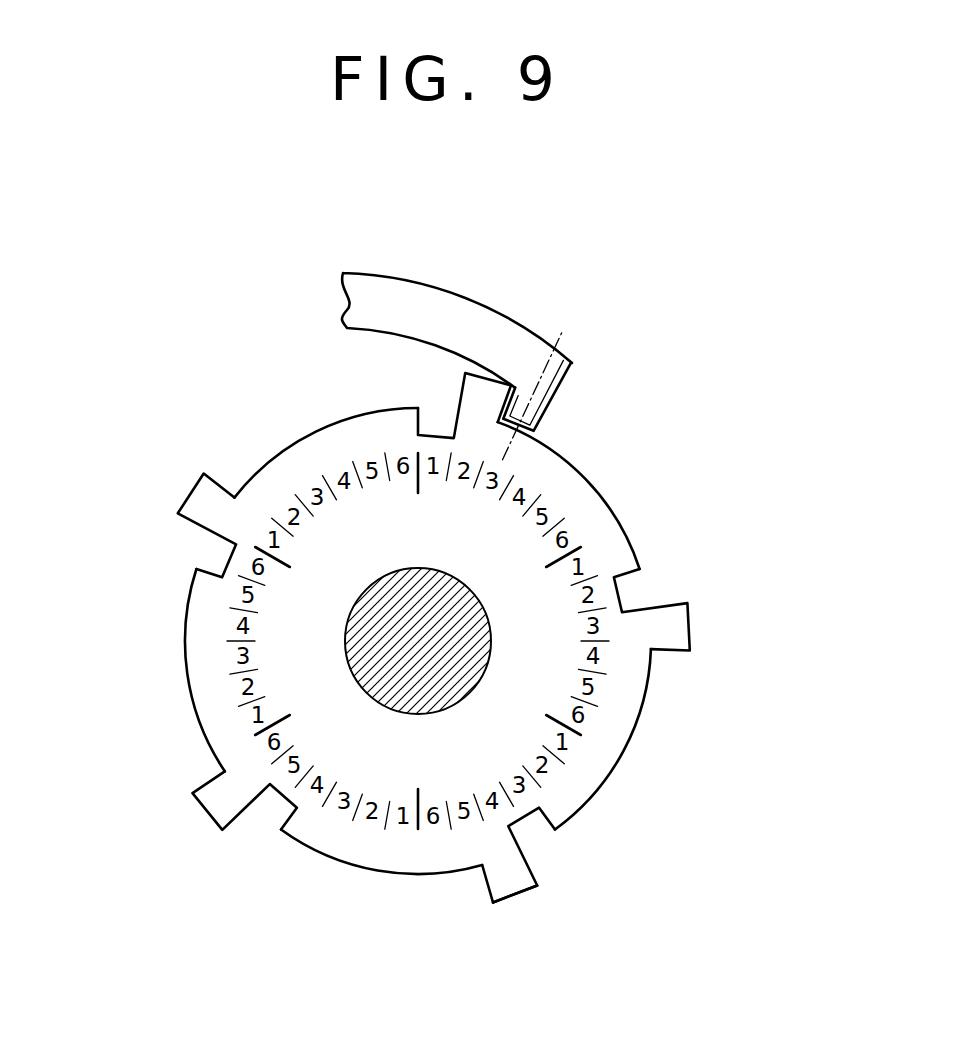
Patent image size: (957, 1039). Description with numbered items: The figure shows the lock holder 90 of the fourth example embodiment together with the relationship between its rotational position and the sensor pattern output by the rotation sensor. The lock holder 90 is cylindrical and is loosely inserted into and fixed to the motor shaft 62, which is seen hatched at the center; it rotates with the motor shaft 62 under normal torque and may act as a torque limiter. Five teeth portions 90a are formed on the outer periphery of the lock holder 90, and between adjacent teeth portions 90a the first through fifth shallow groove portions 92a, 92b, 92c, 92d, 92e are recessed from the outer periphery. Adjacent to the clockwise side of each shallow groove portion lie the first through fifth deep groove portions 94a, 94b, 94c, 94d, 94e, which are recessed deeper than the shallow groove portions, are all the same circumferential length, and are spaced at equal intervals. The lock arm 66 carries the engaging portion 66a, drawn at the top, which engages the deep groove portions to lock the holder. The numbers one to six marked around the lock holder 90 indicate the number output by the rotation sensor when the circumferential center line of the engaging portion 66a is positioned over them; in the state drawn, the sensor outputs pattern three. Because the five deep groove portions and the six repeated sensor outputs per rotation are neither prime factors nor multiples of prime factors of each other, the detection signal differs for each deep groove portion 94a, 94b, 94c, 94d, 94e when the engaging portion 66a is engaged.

The motor shaft 62 is at (440, 714).
The lock arm 66 is at (509, 318).
The engaging portion 66a is at (553, 392).
The lock holder 90 is at (426, 650).
The teeth portion 90a is at (518, 898).
The first shallow groove portion 92a is at (526, 345).
The second shallow groove portion 92b is at (733, 652).
The third shallow groove portion 92c is at (505, 944).
The fourth shallow groove portion 92d is at (110, 554).
The fifth shallow groove portion 92e is at (406, 322).
The first deep groove portion 94a is at (614, 577).
The second deep groove portion 94b is at (539, 808).
The third deep groove portion 94c is at (297, 808).
The fourth deep groove portion 94d is at (222, 577).
The fifth deep groove portion 94e is at (418, 435).